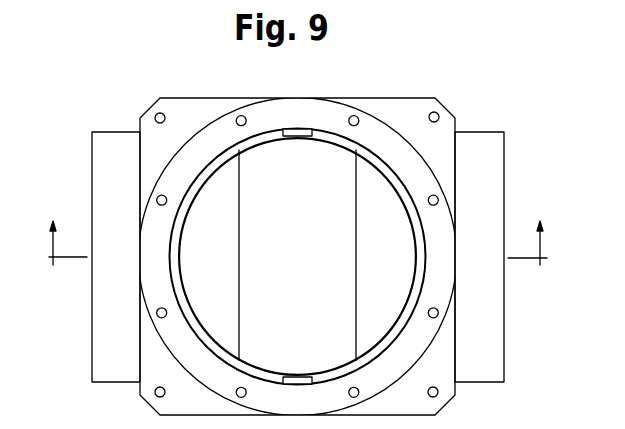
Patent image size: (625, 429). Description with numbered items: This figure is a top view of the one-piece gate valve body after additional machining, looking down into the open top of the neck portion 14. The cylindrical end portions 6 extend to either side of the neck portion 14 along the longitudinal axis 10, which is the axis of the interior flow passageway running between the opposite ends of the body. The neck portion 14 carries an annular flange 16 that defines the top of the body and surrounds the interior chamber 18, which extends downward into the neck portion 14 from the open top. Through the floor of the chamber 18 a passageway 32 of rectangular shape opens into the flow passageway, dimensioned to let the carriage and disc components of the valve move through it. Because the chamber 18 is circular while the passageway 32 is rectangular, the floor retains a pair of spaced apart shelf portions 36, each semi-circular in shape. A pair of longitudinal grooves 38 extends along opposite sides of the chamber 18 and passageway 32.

The cylindrical end portions 6 is at (118, 376).
The longitudinal axis 10 is at (297, 224).
The neck portion 14 is at (403, 162).
The annular flange 16 is at (222, 137).
The interior chamber 18 is at (387, 229).
The passageway 32 is at (327, 177).
The shelf portions 36 is at (197, 270).
The longitudinal grooves 38 is at (300, 128).